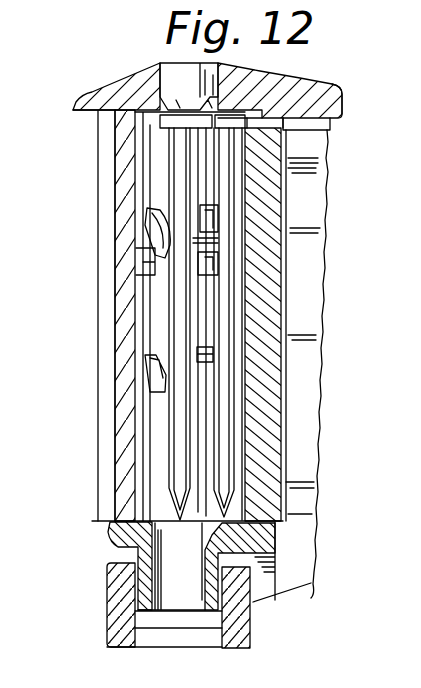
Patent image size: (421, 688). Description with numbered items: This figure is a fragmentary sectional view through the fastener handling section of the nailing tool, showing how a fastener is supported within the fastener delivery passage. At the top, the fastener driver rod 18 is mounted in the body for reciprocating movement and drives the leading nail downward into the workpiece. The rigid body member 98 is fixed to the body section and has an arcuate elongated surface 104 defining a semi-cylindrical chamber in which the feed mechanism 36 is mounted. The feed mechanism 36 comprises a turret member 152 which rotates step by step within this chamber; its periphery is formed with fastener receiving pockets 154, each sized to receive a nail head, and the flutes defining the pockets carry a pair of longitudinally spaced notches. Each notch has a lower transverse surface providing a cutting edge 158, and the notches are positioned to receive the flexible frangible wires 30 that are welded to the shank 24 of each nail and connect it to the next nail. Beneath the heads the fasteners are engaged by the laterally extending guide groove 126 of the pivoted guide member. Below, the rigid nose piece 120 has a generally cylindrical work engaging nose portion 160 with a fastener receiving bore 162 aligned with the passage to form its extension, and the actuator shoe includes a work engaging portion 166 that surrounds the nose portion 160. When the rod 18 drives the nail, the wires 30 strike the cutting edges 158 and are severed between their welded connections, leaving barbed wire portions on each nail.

The fastener driver rod 18 is at (177, 64).
The rigid body member 98 is at (344, 101).
The guide groove 126 is at (328, 131).
The rigid nose piece 120 is at (302, 565).
The shank 24 is at (290, 341).
The feed mechanism 36 is at (150, 138).
The turret member 152 is at (160, 160).
The fastener receiving pockets 154 is at (200, 298).
The elongated surface 104 is at (150, 274).
The flexible frangible wires 30 is at (160, 215).
The cutting edge 158 is at (143, 250).
The work engaging nose portion 160 is at (137, 548).
The fastener receiving bore 162 is at (110, 583).
The work engaging portion 166 is at (236, 624).